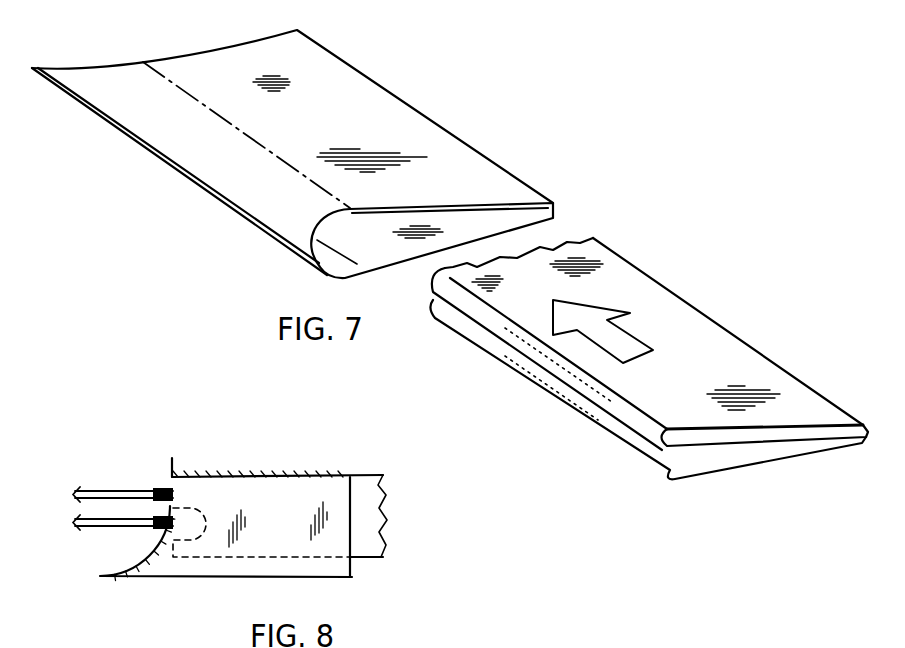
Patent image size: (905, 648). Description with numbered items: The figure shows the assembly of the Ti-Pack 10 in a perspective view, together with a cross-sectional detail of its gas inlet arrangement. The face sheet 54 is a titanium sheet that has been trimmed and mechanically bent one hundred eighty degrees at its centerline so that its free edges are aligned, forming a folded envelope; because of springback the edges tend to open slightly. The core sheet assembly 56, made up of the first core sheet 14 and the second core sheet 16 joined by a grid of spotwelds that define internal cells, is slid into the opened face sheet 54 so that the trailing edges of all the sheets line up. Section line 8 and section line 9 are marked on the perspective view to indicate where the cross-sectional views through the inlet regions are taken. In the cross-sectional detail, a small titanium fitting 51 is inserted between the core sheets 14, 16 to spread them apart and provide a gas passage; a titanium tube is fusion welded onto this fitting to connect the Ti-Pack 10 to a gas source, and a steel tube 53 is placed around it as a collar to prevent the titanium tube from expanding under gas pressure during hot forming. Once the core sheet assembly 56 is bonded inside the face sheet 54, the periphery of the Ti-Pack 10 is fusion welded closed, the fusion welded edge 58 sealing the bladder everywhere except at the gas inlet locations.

In FIG. 7, the section line 8- 8 is at (137, 82).
In FIG. 7, the section line 9- 9 is at (703, 377).
In FIG. 7, the Ti-Pack 10 is at (618, 187).
In FIG. 7, the first core sheet 14 is at (733, 348).
In FIG. 7, the second core sheet 16 is at (620, 445).
In FIG. 7, the core sheet assembly 56 is at (688, 284).
In FIG. 8, the titanium fitting 51 is at (163, 488).
In FIG. 8, the steel tube 53 is at (97, 489).
In FIG. 8, the face sheet 54 is at (180, 578).
In FIG. 8, the fusion welded edge 58 is at (172, 460).